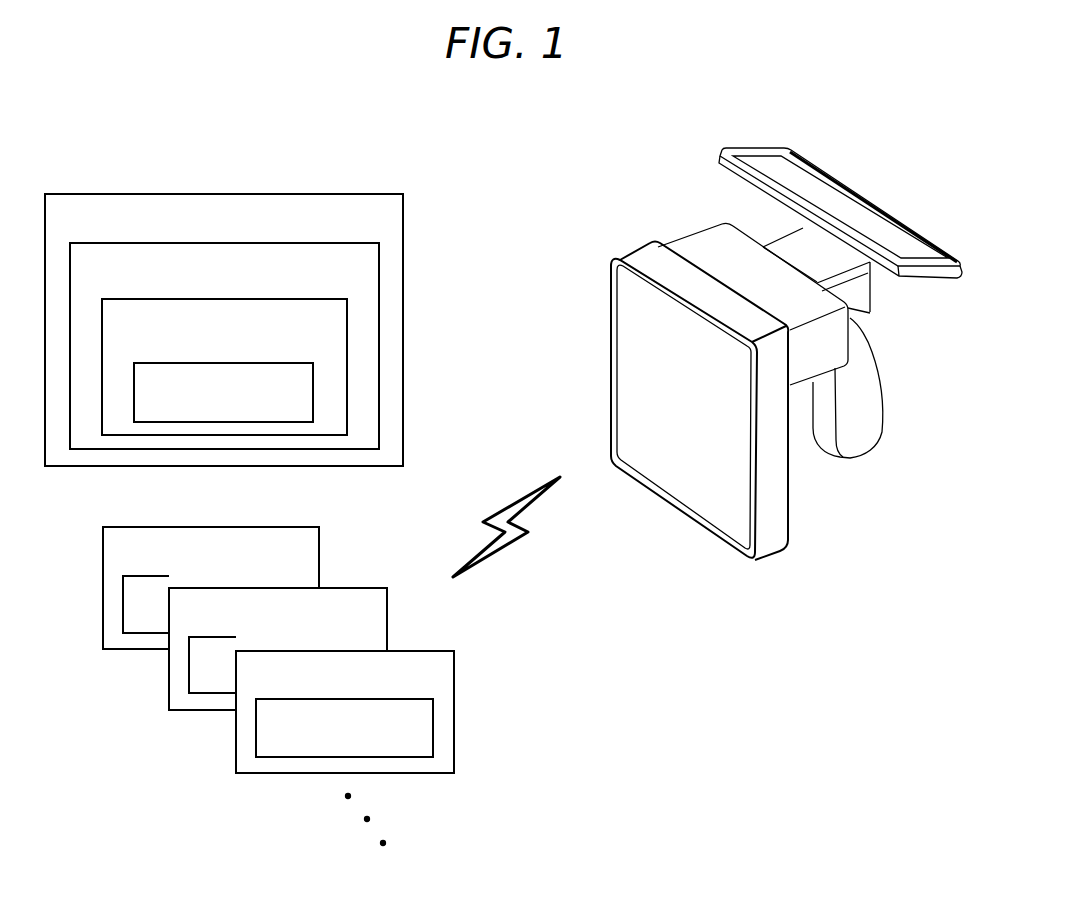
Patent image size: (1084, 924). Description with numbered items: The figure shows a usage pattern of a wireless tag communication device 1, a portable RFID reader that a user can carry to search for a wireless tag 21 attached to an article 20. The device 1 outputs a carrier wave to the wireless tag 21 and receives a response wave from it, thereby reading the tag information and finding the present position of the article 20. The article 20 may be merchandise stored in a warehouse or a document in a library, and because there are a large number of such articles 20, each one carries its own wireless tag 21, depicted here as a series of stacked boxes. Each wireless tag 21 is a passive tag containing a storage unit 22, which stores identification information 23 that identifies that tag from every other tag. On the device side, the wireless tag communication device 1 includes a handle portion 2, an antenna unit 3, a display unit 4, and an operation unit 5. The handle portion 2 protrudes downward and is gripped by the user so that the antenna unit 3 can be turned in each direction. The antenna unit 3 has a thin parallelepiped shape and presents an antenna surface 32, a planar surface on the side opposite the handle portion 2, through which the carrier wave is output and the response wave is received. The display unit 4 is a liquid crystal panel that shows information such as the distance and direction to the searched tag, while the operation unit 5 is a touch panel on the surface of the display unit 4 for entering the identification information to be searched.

The wireless tag communication device 1 is at (852, 130).
The handle portion 2 is at (862, 436).
The antenna unit 3 is at (701, 401).
The antenna surface 32 is at (627, 316).
The display unit 4 is at (878, 231).
The operation unit 5 is at (782, 171).
The article 20 is at (357, 194).
The wireless tag 21 is at (324, 219).
The storage unit 22 is at (300, 299).
The identification information 23 is at (277, 339).